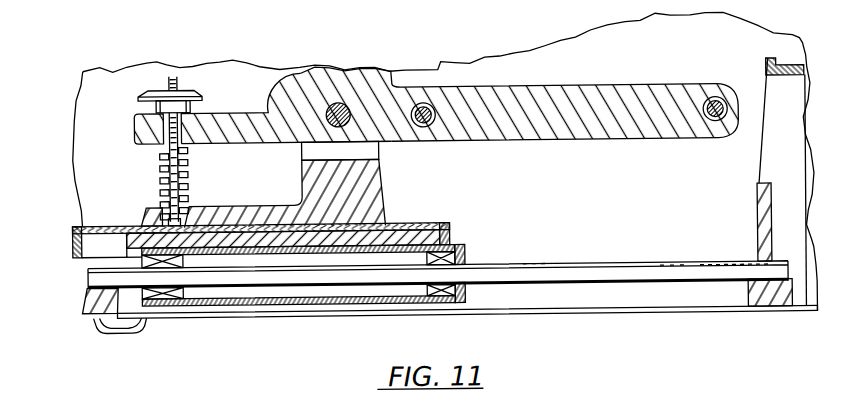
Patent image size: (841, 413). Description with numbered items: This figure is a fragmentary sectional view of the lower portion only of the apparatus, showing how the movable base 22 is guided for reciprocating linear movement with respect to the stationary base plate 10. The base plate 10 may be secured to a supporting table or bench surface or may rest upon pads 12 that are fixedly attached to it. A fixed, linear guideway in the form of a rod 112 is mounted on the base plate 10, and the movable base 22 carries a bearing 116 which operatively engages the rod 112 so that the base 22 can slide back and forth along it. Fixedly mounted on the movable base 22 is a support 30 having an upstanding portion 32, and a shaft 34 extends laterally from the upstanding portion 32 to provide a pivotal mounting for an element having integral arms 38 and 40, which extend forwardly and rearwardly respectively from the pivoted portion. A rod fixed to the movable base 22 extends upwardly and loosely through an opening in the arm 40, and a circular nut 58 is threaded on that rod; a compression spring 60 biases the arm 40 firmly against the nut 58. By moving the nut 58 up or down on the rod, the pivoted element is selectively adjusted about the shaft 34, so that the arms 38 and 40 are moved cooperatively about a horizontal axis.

The base plate 10 is at (662, 318).
The pads 12 is at (119, 324).
The movable base 22 is at (83, 224).
The support 30 is at (293, 212).
The upstanding portion 32 is at (364, 190).
The shaft 34 is at (342, 112).
The arm 38 is at (651, 134).
The arm 40 is at (210, 123).
The circular nut 58 is at (152, 91).
The compression spring 60 is at (189, 187).
The rod 112 is at (550, 285).
The bearing 116 is at (366, 300).